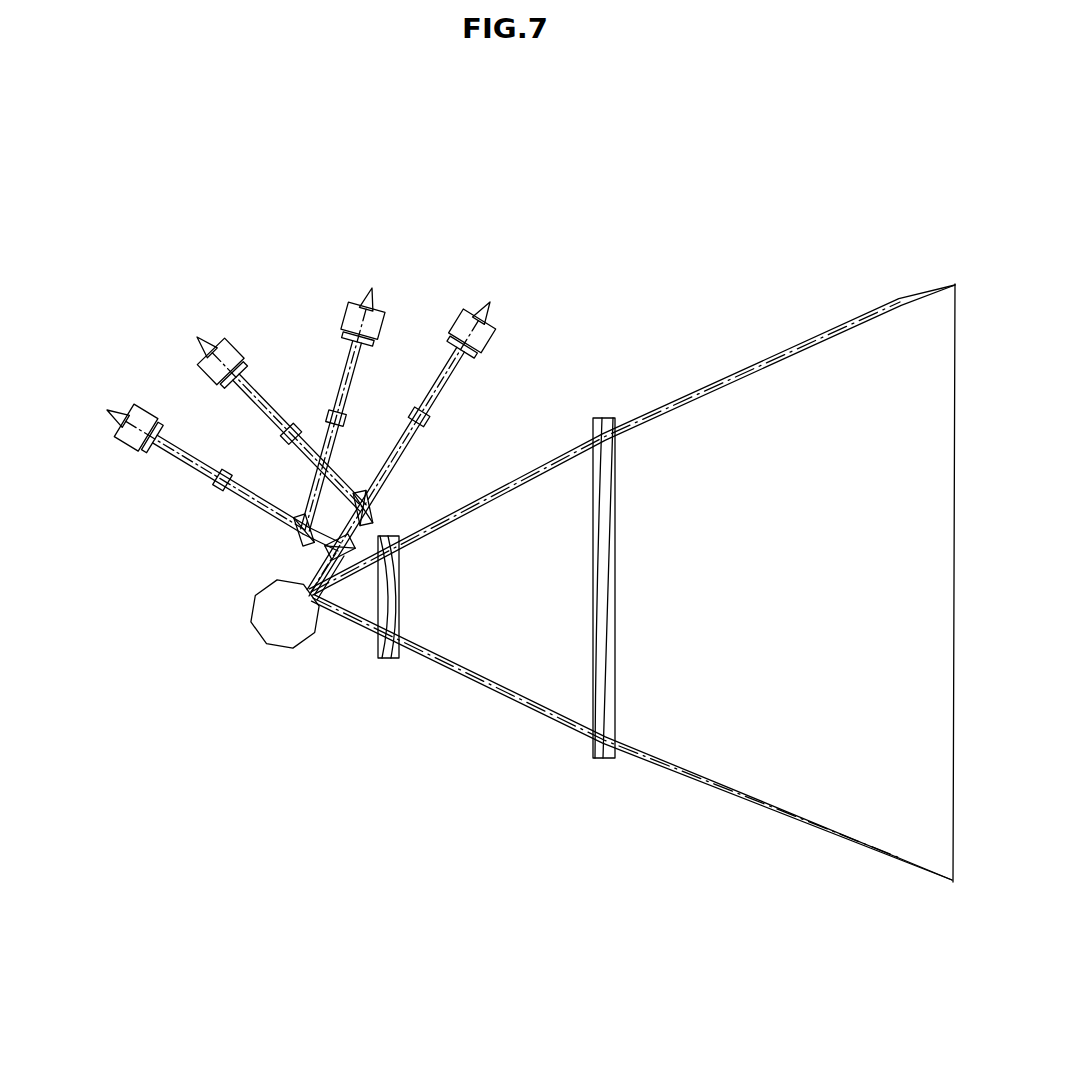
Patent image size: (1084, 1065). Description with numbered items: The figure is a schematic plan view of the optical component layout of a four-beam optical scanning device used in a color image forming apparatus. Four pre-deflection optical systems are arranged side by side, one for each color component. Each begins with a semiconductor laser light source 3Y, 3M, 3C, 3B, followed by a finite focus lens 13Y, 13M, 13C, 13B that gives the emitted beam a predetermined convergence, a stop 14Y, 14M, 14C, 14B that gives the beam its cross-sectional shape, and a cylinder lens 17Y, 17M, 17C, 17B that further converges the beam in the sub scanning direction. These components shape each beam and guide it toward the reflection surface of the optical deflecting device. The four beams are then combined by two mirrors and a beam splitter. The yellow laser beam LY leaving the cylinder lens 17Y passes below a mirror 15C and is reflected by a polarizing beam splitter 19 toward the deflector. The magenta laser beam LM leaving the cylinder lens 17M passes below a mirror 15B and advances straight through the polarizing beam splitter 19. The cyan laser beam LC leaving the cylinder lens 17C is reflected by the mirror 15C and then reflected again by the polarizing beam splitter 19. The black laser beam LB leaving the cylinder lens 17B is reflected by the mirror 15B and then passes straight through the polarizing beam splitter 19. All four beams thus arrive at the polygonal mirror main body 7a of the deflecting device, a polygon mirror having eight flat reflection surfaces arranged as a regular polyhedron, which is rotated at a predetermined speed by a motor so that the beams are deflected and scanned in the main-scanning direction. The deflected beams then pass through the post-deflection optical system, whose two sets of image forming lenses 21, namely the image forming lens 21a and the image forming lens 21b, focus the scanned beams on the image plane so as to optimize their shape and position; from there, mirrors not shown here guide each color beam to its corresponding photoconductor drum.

The yellow laser beam LY is at (215, 488).
The black laser beam LB is at (263, 403).
The cyan laser beam LC is at (350, 381).
The magenta laser beam LM is at (415, 425).
The light source 3Y is at (107, 411).
The light source 3B is at (198, 337).
The light source 3C is at (373, 290).
The light source 3M is at (492, 303).
The finite focus lens 13Y is at (123, 438).
The finite focus lens 13B is at (206, 368).
The finite focus lens 13C is at (358, 304).
The finite focus lens 13M is at (493, 335).
The stop 14Y is at (144, 453).
The stop 14B is at (228, 393).
The stop 14C is at (342, 340).
The stop 14M is at (480, 358).
The cylinder lens 17Y is at (212, 486).
The cylinder lens 17B is at (282, 444).
The cylinder lens 17C is at (348, 423).
The cylinder lens 17M is at (430, 423).
The mirror 15B is at (370, 517).
The mirror 15C is at (300, 540).
The polarizing beam splitter 19 is at (355, 565).
The polygonal mirror main body 7a is at (275, 650).
The image forming lenses 21 is at (496, 651).
The image forming lens 21a is at (393, 660).
The image forming lens 21b is at (597, 758).